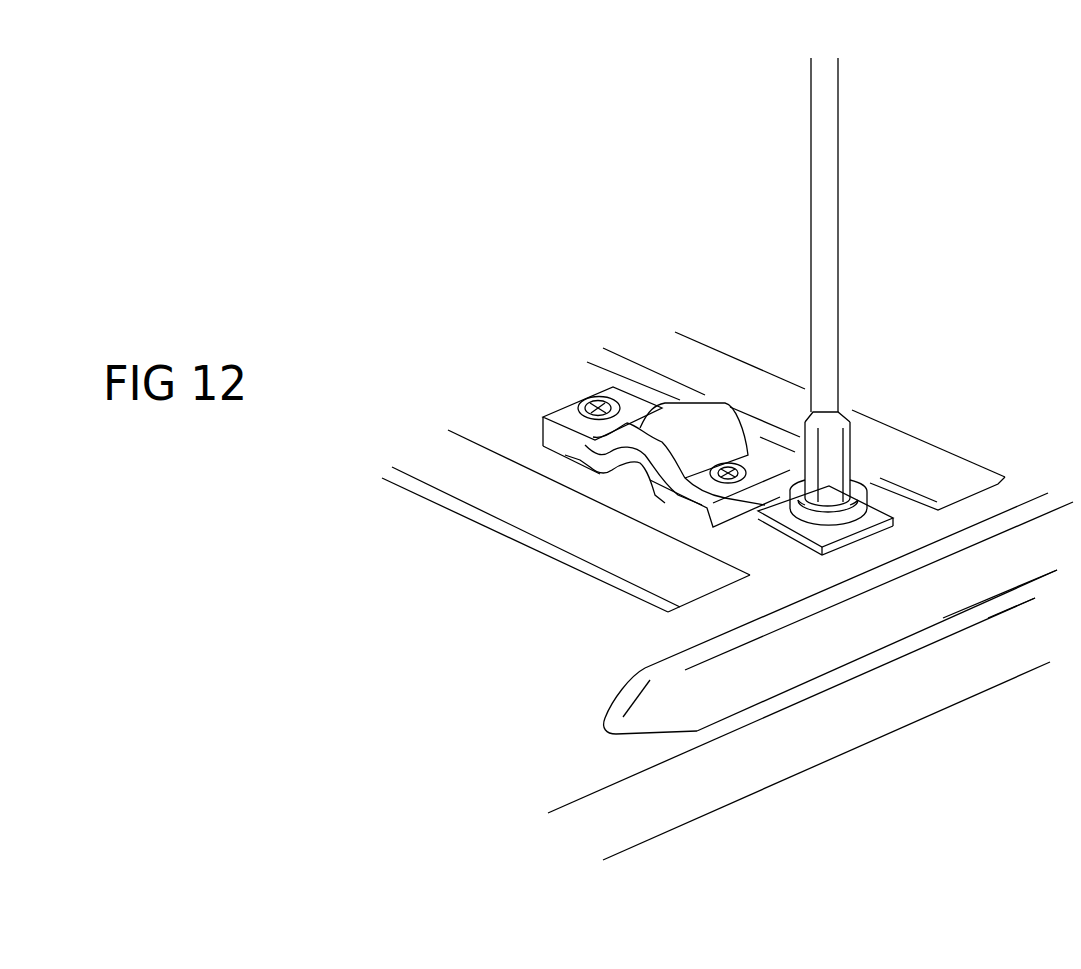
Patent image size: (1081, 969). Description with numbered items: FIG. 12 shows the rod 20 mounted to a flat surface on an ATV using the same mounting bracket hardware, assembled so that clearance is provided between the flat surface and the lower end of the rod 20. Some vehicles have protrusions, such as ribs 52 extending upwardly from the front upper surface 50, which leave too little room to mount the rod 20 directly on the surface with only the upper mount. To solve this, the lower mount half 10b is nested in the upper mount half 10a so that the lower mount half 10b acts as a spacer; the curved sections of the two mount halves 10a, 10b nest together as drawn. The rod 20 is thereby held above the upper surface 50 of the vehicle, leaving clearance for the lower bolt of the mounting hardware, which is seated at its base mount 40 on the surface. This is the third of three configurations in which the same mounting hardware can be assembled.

The upper mount half 10a is at (638, 418).
The lower mount half 10b is at (577, 455).
The rod 20 is at (810, 222).
The base mount 40 is at (808, 467).
The upper surface 50 is at (548, 654).
The ribs 52 is at (882, 615).